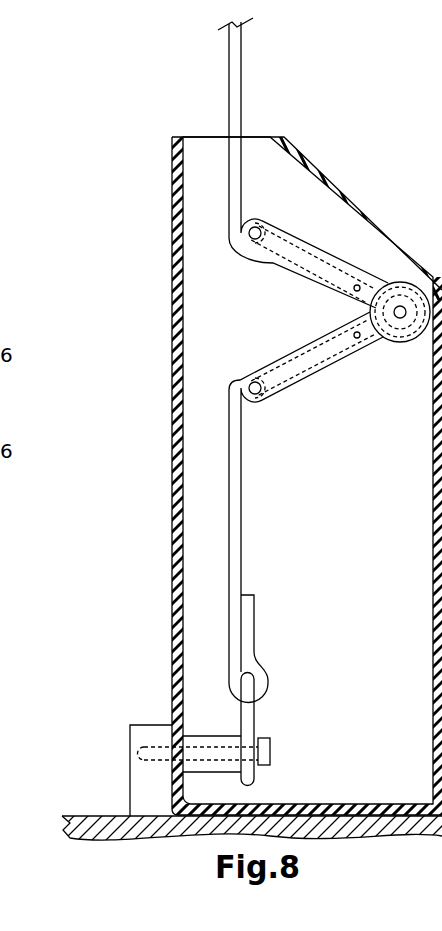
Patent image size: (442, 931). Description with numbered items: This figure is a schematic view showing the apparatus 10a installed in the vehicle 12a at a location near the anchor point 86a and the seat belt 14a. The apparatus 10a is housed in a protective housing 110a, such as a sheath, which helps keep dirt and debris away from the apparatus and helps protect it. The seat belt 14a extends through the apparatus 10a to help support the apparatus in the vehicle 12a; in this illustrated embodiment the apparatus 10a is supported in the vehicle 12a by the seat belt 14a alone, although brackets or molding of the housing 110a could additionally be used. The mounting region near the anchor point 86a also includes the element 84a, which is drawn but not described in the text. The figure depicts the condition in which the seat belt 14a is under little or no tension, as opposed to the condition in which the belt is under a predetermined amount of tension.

The apparatus 10a is at (292, 300).
The vehicle 12a is at (100, 823).
The seat belt 14a is at (230, 86).
The mounting block and bolt 84a is at (145, 735).
The anchor point 86a is at (207, 736).
The protective housing 110a is at (172, 548).